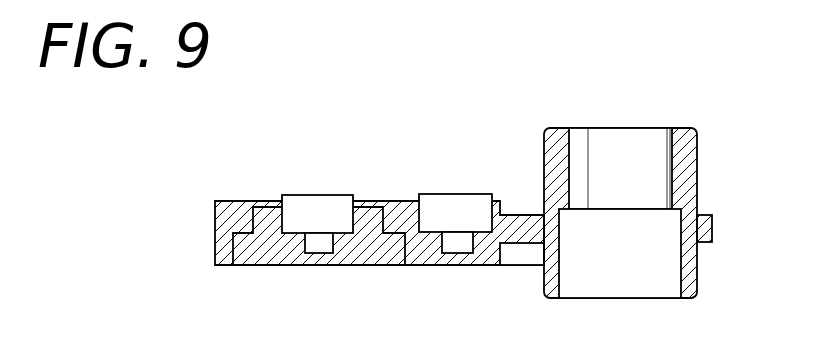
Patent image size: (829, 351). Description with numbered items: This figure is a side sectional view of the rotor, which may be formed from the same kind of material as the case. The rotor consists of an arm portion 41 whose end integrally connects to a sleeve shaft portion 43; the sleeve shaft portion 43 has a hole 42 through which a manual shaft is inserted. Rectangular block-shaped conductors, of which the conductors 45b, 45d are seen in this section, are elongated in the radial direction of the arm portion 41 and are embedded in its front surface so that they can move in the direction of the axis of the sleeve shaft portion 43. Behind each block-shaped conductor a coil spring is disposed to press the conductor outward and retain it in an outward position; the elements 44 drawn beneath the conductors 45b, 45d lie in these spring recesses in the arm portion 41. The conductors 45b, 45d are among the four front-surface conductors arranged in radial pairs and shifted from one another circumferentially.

The arm portion 41 is at (388, 255).
The hole 42 is at (681, 268).
The sleeve shaft portion 43 is at (688, 160).
The pin 44 is at (321, 245).
The block-shaped conductor 45b is at (329, 202).
The block-shaped conductor 45d is at (472, 200).